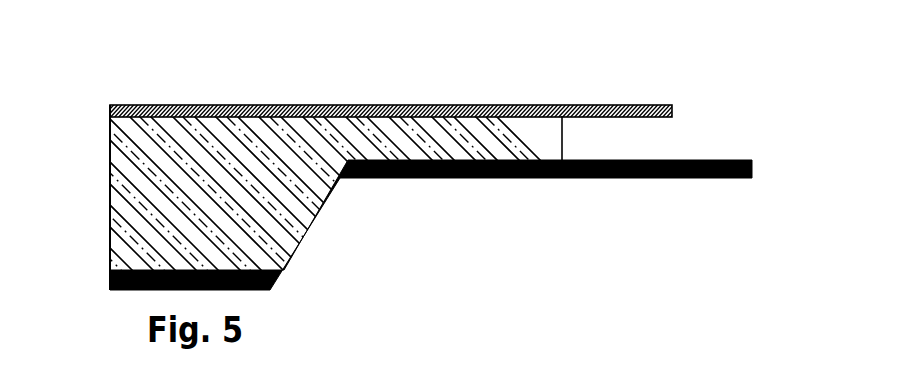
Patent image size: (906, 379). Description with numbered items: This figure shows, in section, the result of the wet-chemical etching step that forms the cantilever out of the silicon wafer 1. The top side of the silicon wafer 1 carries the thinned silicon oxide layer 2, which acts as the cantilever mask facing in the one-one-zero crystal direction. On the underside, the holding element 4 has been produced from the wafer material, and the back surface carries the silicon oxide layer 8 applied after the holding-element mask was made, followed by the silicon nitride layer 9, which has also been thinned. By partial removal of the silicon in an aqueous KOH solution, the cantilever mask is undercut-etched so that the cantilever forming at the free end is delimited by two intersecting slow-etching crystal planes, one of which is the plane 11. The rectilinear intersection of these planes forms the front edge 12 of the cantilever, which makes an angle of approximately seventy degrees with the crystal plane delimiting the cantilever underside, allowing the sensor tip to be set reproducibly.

The silicon wafer 1 is at (117, 188).
The silicon oxide layer 2 is at (112, 107).
The holding element 4 is at (112, 152).
The silicon oxide layer 8 is at (111, 271).
The silicon nitride layer 9 is at (130, 291).
The slow-etching plane 11 is at (588, 145).
The front edge 12 is at (618, 152).